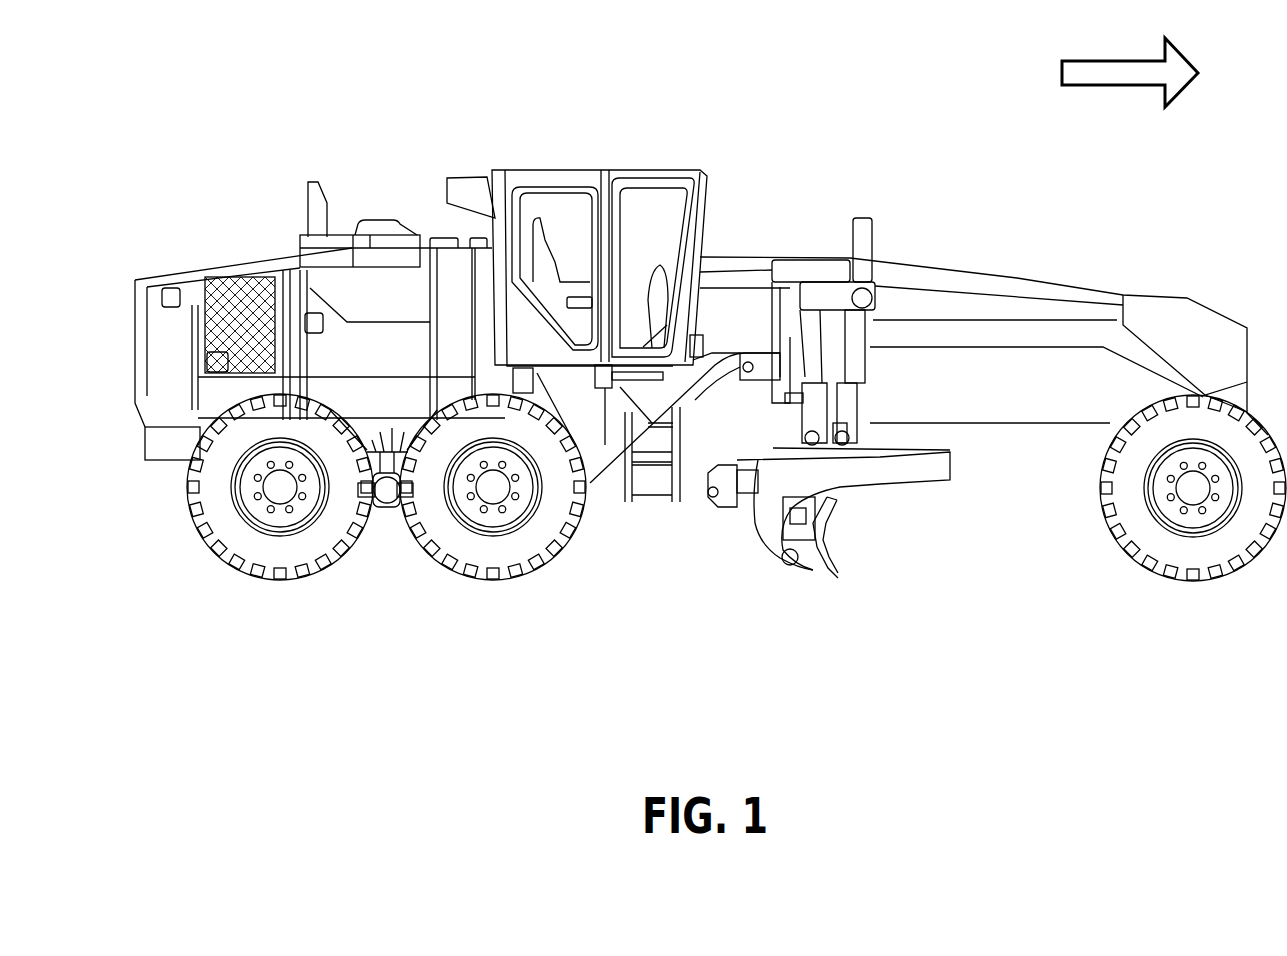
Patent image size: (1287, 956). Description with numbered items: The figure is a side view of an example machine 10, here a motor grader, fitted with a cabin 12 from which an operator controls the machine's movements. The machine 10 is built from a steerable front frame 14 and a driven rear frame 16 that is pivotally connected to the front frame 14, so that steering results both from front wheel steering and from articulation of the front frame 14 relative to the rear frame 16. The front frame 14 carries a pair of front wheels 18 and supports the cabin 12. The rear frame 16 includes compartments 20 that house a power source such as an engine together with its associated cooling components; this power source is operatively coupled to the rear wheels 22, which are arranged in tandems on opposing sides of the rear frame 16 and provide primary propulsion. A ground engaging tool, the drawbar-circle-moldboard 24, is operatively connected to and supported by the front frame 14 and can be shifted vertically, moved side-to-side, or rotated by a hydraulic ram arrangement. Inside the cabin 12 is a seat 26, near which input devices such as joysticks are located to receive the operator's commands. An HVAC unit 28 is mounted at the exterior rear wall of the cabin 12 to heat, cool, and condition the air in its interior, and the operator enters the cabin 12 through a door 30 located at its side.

The machine 10 is at (768, 203).
The cabin 12 is at (583, 182).
The front frame 14 is at (950, 305).
The rear frame 16 is at (158, 388).
The front wheels 18 is at (1127, 488).
The compartments 20 is at (248, 290).
The rear wheels 22 is at (286, 550).
The drawbar-circle-moldboard (DCM) 24 is at (820, 522).
The seat 26 is at (527, 232).
The HVAC unit 28 is at (468, 187).
The door 30 is at (654, 240).